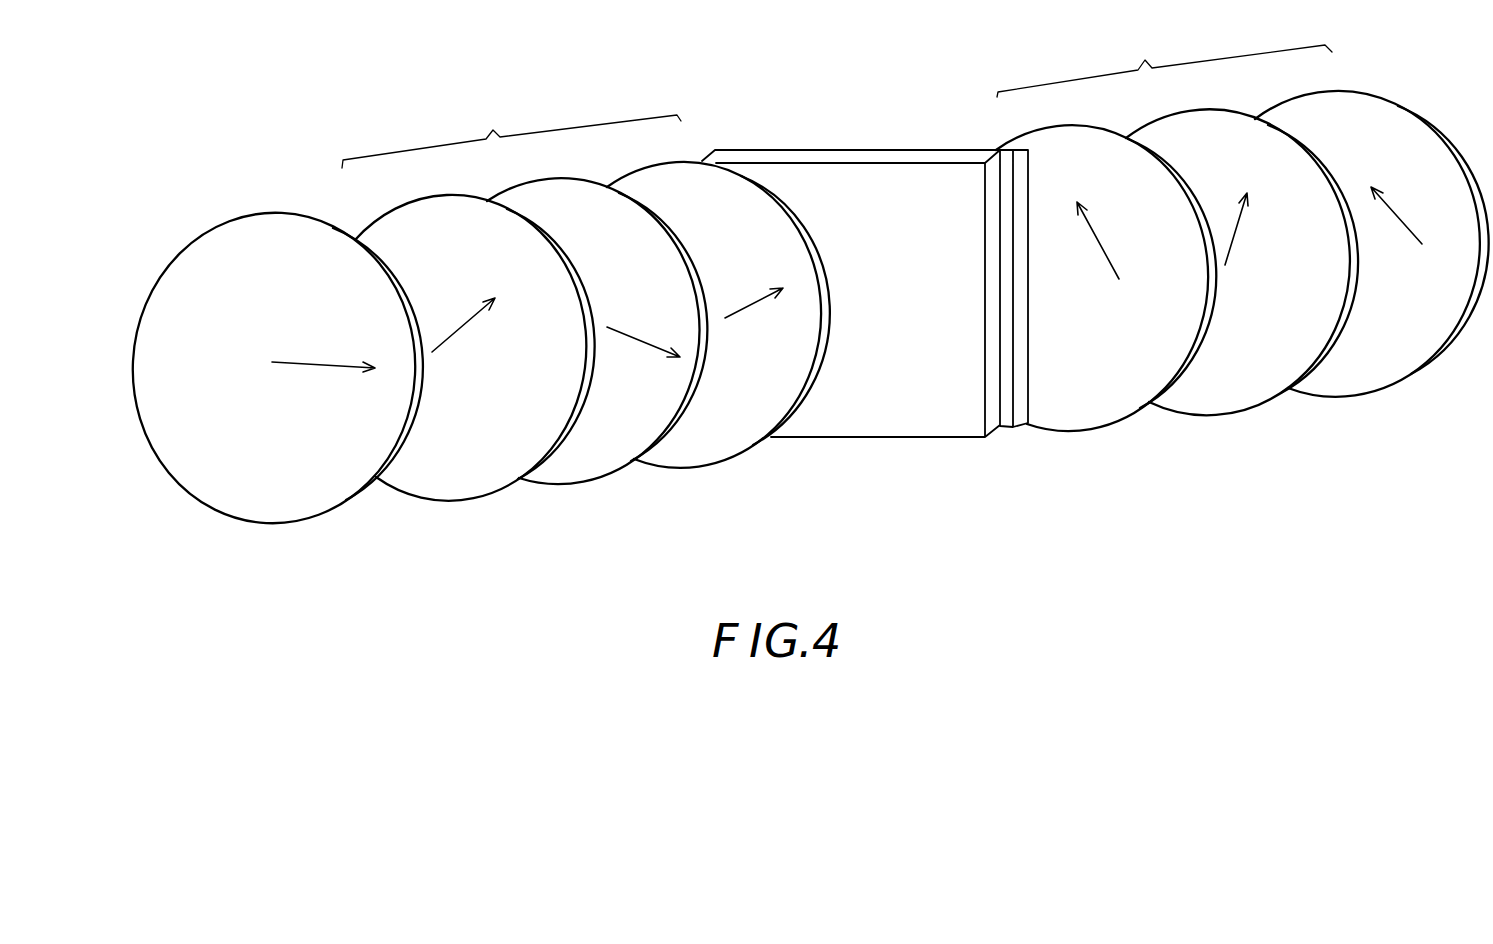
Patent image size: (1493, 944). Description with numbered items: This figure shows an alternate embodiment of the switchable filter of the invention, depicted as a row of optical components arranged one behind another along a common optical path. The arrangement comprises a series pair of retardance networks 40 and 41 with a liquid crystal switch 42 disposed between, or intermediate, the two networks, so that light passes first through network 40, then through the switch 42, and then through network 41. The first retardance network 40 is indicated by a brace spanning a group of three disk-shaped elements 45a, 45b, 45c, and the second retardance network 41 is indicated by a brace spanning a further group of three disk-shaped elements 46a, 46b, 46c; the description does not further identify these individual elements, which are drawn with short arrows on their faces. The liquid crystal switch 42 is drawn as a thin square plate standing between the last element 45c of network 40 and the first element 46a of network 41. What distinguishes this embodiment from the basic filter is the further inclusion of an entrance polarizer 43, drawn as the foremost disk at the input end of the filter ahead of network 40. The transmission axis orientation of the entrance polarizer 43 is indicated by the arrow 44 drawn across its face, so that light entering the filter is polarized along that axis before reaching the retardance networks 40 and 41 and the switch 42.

The retardance network 40 is at (511, 134).
The retardance network 41 is at (1164, 65).
The liquid crystal switch 42 is at (762, 152).
The entrance polarizer 43 is at (192, 247).
The arrow 44 is at (348, 365).
The first rotating plate 45a is at (465, 323).
The second rotating plate 45b is at (639, 337).
The third rotating plate 45c is at (758, 300).
The fourth rotating plate 46a is at (1092, 234).
The fifth rotating plate 46b is at (1240, 214).
The sixth rotating plate 46c is at (1393, 212).